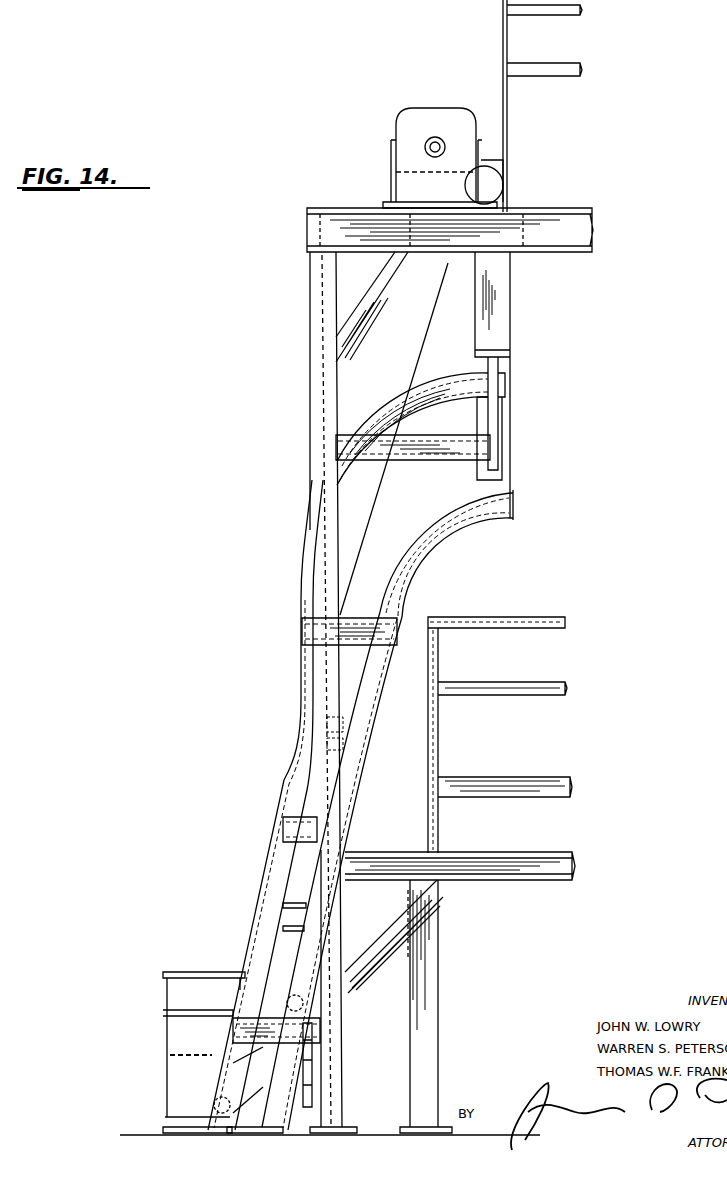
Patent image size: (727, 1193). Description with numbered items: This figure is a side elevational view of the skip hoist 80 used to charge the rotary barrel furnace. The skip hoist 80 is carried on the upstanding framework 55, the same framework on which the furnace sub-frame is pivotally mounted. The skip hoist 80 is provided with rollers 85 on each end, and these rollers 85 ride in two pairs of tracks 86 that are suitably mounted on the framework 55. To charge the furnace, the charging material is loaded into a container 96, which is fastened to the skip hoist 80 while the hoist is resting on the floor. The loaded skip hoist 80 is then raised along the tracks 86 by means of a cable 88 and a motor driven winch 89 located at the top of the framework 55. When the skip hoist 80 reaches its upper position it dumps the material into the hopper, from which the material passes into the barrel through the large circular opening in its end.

The upstanding framework 55 is at (303, 394).
The skip hoist 80 is at (275, 997).
The rollers 85 is at (302, 1003).
The tracks 86 is at (293, 790).
The cable 88 is at (423, 350).
The motor driven winch 89 is at (494, 144).
The container 96 is at (178, 1035).